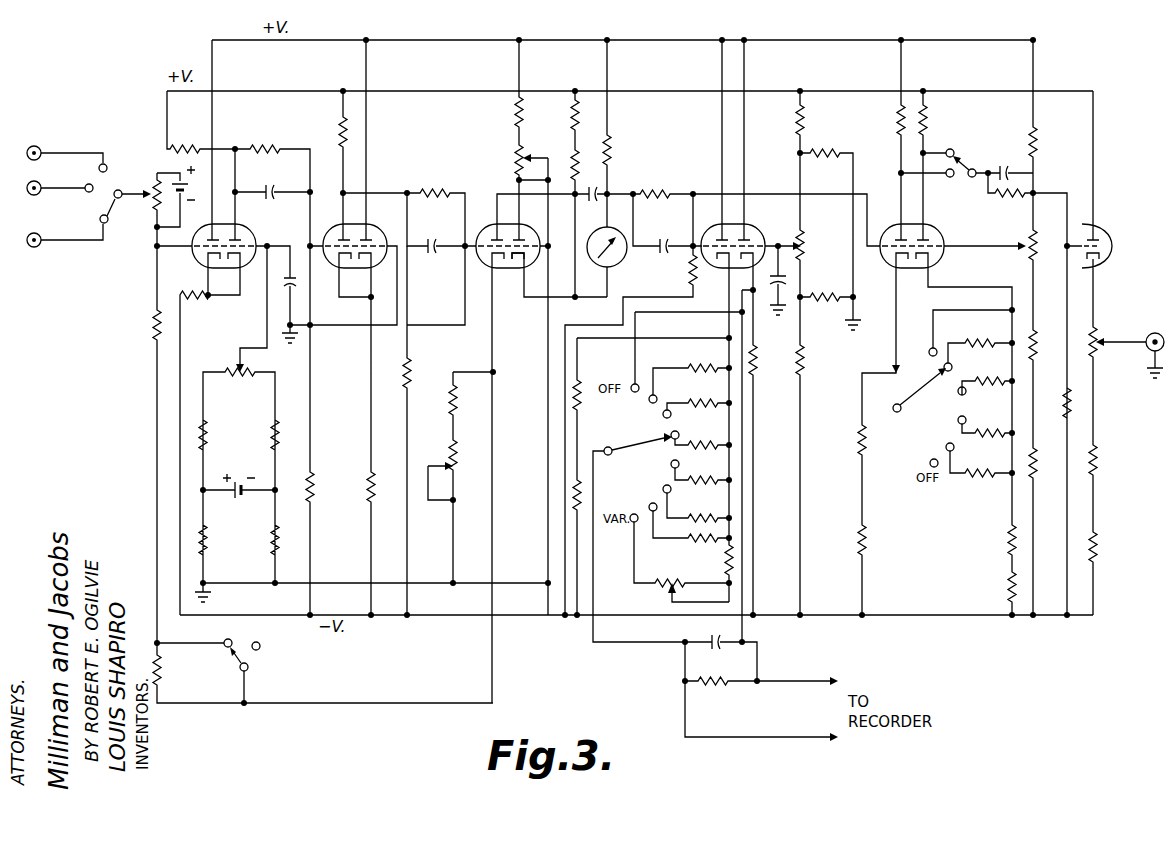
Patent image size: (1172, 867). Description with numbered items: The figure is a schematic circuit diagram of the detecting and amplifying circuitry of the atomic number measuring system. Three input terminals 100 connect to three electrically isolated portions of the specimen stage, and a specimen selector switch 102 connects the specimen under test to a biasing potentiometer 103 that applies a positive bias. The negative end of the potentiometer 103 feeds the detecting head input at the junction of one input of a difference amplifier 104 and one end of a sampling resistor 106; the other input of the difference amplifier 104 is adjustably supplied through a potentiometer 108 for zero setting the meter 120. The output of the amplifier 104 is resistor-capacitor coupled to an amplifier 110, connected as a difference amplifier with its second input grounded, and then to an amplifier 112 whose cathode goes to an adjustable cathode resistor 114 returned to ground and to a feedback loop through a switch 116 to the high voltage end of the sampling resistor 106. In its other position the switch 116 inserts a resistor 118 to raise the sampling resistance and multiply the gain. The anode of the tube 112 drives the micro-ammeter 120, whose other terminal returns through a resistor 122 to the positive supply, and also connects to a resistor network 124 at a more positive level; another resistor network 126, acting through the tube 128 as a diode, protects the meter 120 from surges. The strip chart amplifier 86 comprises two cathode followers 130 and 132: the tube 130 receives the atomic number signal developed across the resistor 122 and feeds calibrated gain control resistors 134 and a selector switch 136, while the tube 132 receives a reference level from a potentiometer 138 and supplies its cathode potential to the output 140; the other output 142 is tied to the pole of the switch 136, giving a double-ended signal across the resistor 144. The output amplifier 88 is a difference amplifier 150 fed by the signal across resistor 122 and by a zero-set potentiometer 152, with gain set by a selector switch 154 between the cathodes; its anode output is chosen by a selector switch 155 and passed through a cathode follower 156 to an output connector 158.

The strip chart amplifier 86 is at (709, 188).
The output amplifier 88 is at (884, 193).
The input terminals 100 is at (36, 152).
The specimen selector switch 102 is at (122, 206).
The biasing potentiometer 103 is at (150, 176).
The difference amplifier 104 is at (248, 239).
The sampling resistor 106 is at (154, 324).
The potentiometer 108 is at (247, 374).
The amplifier 110 is at (383, 232).
The amplifier 112 is at (494, 218).
The adjustable cathode resistor 114 is at (454, 464).
The switch 116 is at (246, 660).
The resistor 118 is at (162, 668).
The micro-ammeter 120 is at (612, 261).
The resistor 122 is at (609, 143).
The resistor network 124 is at (573, 130).
The resistor network 126 is at (515, 150).
The amplifier tube 128 is at (528, 274).
The cathode follower 130 is at (718, 236).
The cathode follower 132 is at (746, 234).
The calibrated gain control resistors 134 is at (702, 406).
The selector switch 136 is at (648, 442).
The potentiometer 138 is at (804, 246).
The output 140 is at (792, 680).
The output 142 is at (685, 718).
The resistor 144 is at (726, 685).
The difference amplifier 150 is at (938, 232).
The potentiometer 152 is at (1009, 246).
The selector switch 154 is at (936, 388).
The selector switch 155 is at (961, 164).
The cathode follower 156 is at (1102, 232).
The output connector 158 is at (1160, 328).